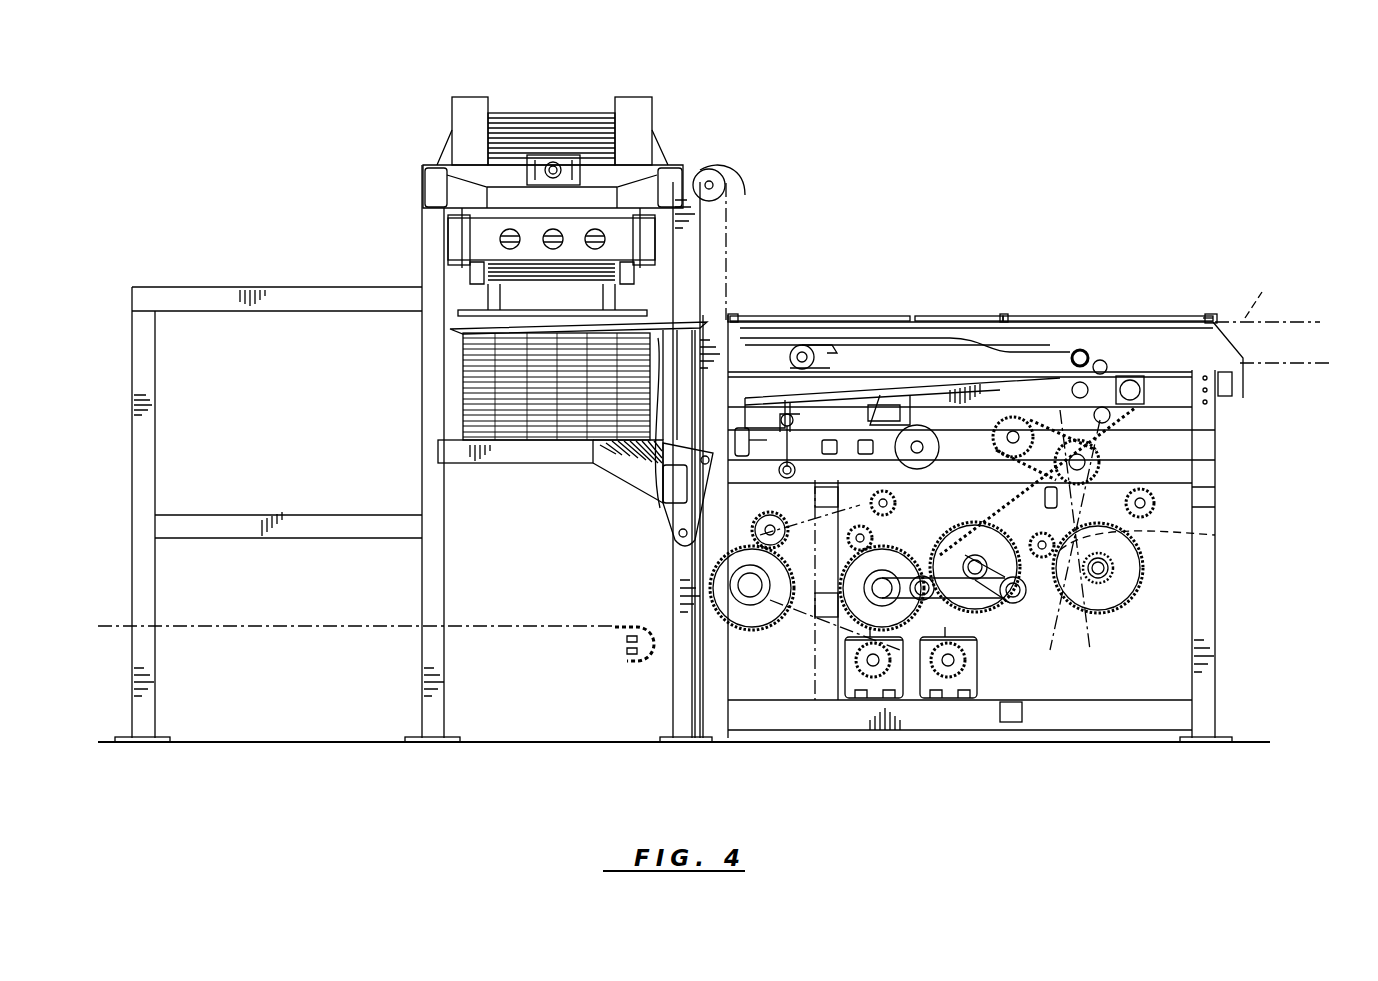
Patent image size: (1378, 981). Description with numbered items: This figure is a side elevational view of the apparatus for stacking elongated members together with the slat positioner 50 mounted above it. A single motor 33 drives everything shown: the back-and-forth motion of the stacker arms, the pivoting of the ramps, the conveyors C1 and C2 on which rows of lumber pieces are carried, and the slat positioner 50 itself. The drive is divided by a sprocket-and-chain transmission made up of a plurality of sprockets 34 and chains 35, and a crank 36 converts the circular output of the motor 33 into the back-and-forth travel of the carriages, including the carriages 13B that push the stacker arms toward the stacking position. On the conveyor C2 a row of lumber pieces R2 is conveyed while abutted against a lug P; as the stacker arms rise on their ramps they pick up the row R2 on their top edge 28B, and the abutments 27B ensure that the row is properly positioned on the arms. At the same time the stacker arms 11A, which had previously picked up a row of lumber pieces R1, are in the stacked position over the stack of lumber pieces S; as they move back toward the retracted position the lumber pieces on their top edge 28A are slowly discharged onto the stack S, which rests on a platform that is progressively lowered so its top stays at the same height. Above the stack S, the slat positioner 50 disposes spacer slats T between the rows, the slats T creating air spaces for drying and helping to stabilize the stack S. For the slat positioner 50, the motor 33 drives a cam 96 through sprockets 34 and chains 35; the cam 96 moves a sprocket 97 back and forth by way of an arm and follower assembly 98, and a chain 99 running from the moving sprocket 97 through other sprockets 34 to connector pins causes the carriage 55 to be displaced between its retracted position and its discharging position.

The slat positioner 50 is at (726, 96).
The sprocket 97 is at (708, 169).
The sprockets 34 is at (728, 183).
The carriage 55 is at (488, 232).
The row of lumber pieces R1 is at (482, 319).
The chain 99 is at (728, 250).
The lug P is at (730, 318).
The row of lumber pieces R2 is at (784, 312).
The abutments 27B is at (917, 318).
The conveyor plate 28B is at (850, 325).
The conveyor C1 is at (960, 318).
The conveyor C2 is at (1245, 318).
The carriages 13B is at (1082, 350).
The top edge 28A is at (460, 328).
The spacer slats T is at (462, 436).
The stack of lumber pieces S is at (547, 491).
The stacker arms 11A is at (656, 418).
The arm and follower assembly 98 is at (792, 450).
The cam 96 is at (752, 526).
The chains 35 is at (775, 572).
The crank 36 is at (990, 584).
The motor 33 is at (973, 682).